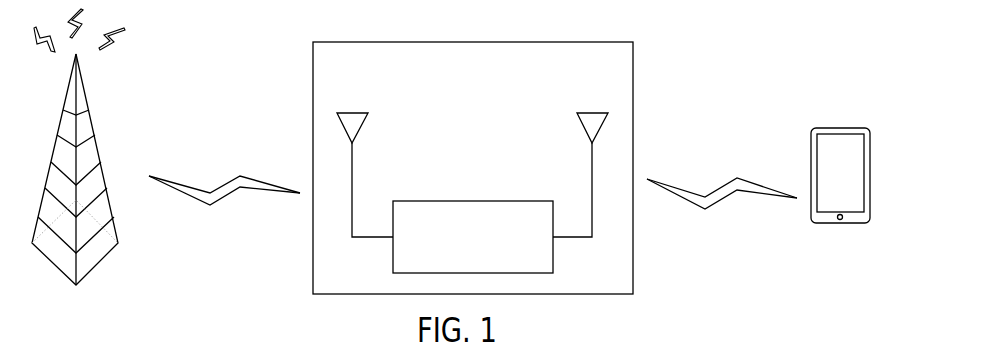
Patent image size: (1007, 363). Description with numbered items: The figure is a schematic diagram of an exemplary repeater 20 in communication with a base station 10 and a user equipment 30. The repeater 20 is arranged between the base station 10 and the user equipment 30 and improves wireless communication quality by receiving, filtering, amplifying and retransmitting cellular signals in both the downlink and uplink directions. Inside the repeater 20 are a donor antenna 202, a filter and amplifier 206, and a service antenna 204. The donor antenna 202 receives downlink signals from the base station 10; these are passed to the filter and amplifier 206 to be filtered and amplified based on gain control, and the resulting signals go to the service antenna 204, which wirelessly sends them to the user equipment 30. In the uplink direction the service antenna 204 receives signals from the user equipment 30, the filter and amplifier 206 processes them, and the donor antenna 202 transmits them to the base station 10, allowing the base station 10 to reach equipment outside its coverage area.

The base station 10 is at (98, 145).
The repeater 20 is at (514, 68).
The donor antenna 202 is at (365, 165).
The service antenna 204 is at (580, 165).
The filter and amplifier 206 is at (524, 258).
The user equipment 30 is at (828, 128).